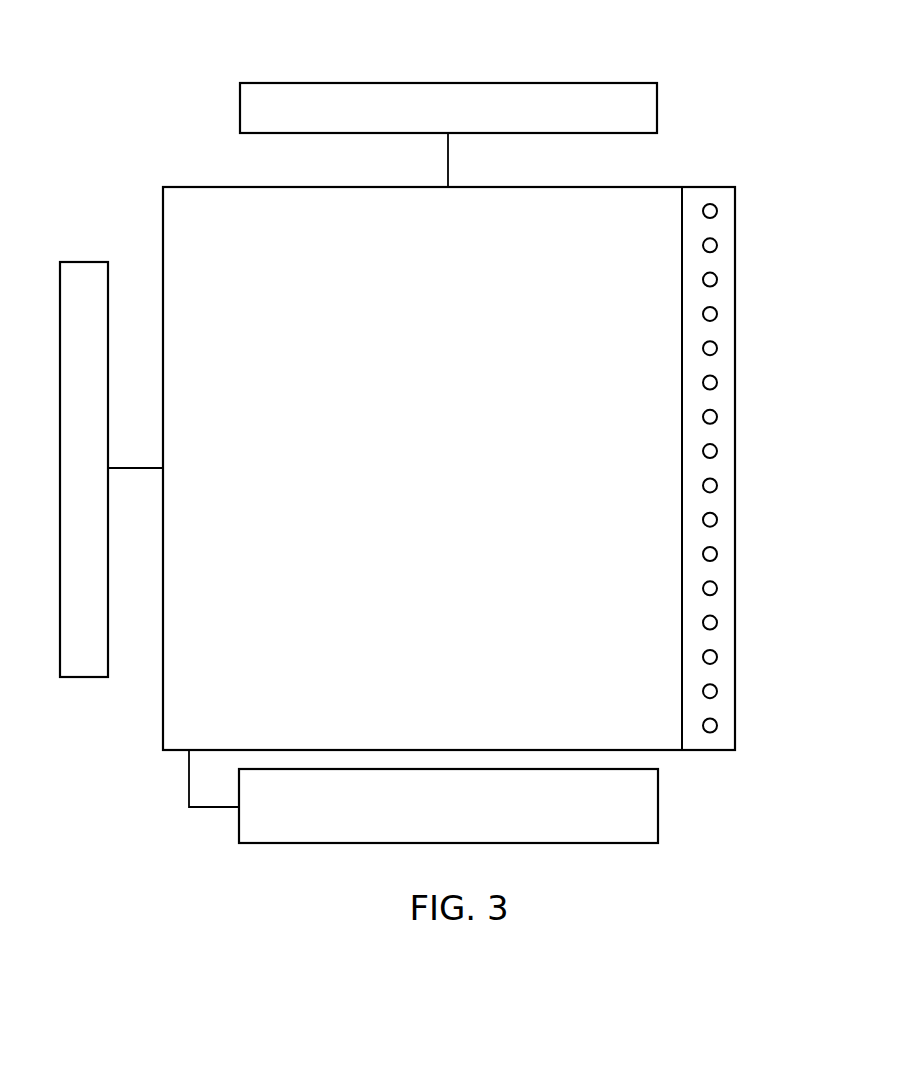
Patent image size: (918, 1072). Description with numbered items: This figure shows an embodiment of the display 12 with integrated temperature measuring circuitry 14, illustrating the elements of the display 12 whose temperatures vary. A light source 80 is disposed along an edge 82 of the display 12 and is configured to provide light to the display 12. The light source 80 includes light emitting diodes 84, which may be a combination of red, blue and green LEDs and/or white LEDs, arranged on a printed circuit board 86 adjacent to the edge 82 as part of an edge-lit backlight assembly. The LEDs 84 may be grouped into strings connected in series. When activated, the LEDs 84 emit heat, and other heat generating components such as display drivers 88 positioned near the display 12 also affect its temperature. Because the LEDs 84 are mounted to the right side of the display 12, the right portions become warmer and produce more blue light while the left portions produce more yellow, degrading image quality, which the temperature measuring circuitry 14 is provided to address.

The display 12 is at (248, 41).
The display drivers 88 is at (640, 83).
The light source 80 is at (705, 168).
The edge 82 is at (735, 413).
The light emitting diodes 84 is at (716, 345).
The printed circuit board 86 is at (715, 746).
The temperature measuring circuitry 14 is at (610, 845).